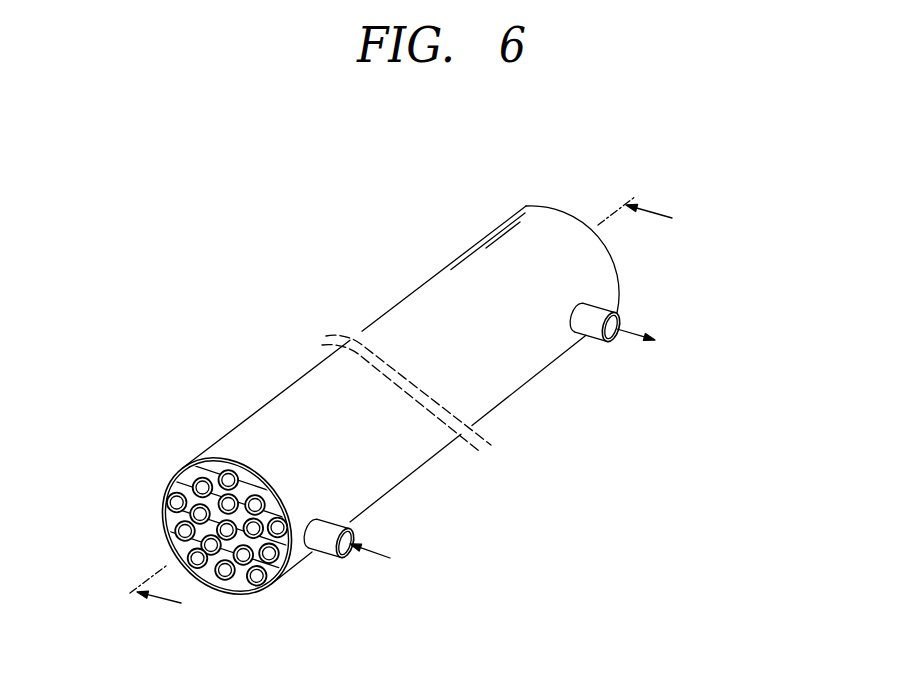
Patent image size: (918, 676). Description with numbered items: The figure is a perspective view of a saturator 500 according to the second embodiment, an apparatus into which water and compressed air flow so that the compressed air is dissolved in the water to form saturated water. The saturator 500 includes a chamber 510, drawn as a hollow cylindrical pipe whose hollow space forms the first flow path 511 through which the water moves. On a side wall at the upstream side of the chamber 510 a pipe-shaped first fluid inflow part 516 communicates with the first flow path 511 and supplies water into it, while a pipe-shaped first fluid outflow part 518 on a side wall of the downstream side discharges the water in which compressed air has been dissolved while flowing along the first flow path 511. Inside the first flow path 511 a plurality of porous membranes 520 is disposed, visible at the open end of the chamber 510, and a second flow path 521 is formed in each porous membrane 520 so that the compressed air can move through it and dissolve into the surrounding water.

The saturator 500 is at (492, 154).
The chamber 510 is at (423, 281).
The first flow path 511 is at (170, 546).
The first fluid inflow part 516 is at (322, 541).
The first fluid outflow part 518 is at (590, 322).
The porous membranes 520 is at (177, 474).
The second flow path 521 is at (181, 529).